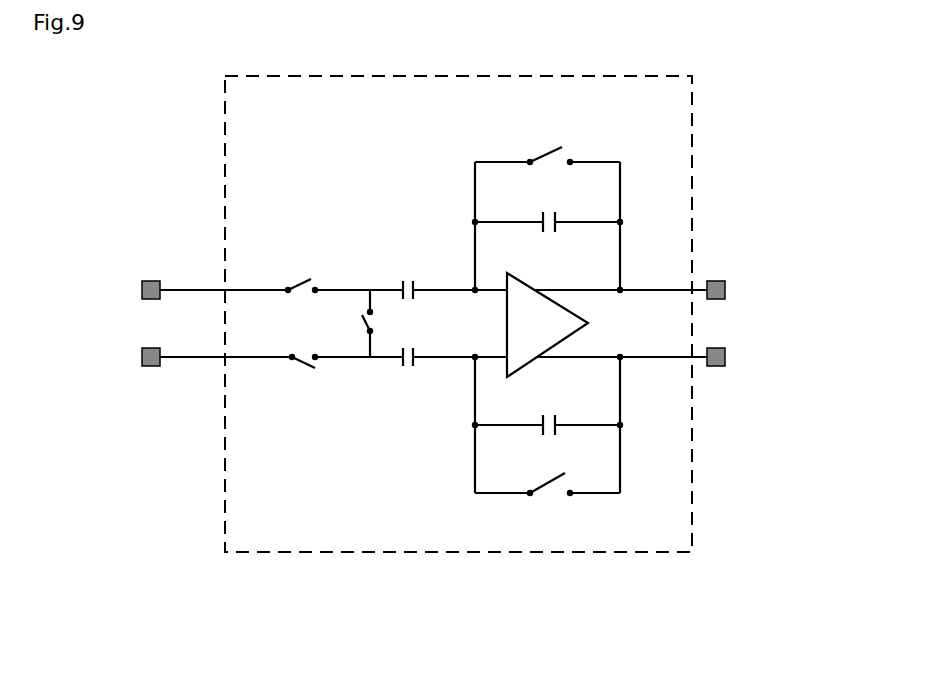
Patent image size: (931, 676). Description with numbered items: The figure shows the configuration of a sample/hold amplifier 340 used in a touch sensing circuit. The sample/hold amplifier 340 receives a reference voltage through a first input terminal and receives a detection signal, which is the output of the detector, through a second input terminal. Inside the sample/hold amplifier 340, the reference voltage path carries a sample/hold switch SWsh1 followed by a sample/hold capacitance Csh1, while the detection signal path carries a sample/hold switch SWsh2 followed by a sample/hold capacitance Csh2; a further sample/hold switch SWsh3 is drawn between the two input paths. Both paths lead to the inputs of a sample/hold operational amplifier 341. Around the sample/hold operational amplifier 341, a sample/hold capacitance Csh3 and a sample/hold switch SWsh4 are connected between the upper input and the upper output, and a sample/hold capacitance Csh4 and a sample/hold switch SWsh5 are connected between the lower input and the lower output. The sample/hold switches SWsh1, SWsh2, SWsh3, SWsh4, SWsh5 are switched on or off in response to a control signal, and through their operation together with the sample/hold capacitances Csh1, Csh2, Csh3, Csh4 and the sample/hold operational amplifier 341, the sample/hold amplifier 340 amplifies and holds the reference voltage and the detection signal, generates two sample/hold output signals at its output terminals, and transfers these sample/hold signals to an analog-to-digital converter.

The sample/hold amplifier 340 is at (332, 555).
The sample/hold operational amplifier 341 is at (588, 323).
The sample/hold switch SWsh1 is at (308, 270).
The sample/hold switch SWsh2 is at (308, 384).
The sample/hold switch SWsh3 is at (333, 325).
The sample/hold switch SWsh4 is at (555, 139).
The sample/hold switch SWsh5 is at (550, 502).
The sample/hold capacitance Csh1 is at (406, 273).
The sample/hold capacitance Csh2 is at (406, 380).
The sample/hold capacitance Csh3 is at (548, 205).
The sample/hold capacitance Csh4 is at (548, 409).